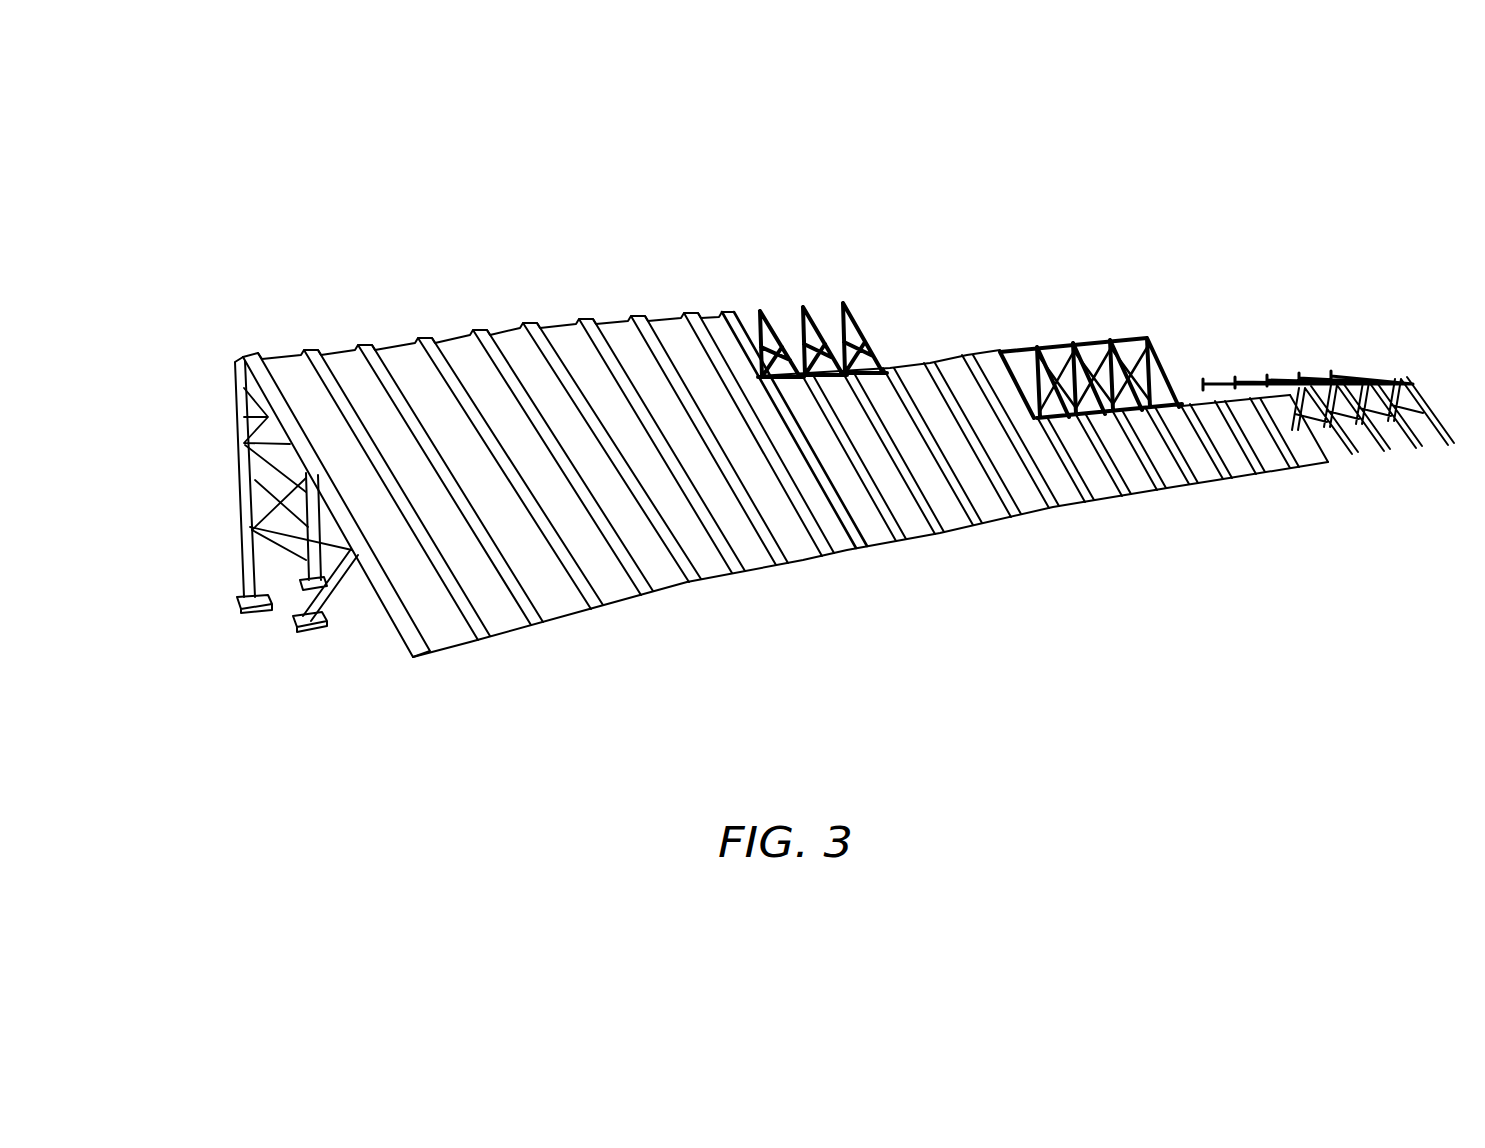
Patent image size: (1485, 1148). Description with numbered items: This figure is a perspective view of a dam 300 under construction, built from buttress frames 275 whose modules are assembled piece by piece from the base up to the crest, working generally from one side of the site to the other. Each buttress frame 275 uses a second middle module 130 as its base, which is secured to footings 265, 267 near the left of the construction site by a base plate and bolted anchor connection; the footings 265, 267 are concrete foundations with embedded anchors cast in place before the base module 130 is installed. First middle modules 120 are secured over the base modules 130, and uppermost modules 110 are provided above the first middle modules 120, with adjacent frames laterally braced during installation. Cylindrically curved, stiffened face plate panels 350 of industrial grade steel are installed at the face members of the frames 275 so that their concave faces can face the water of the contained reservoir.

The dam 300 is at (1018, 187).
The cylindrically curved face plate panel 350 is at (618, 590).
The buttress frame 275 is at (147, 472).
The uppermost module 110 is at (215, 370).
The first middle module 120 is at (215, 445).
The second middle module 130 is at (215, 525).
The footing 267 is at (247, 611).
The footing 265 is at (318, 634).